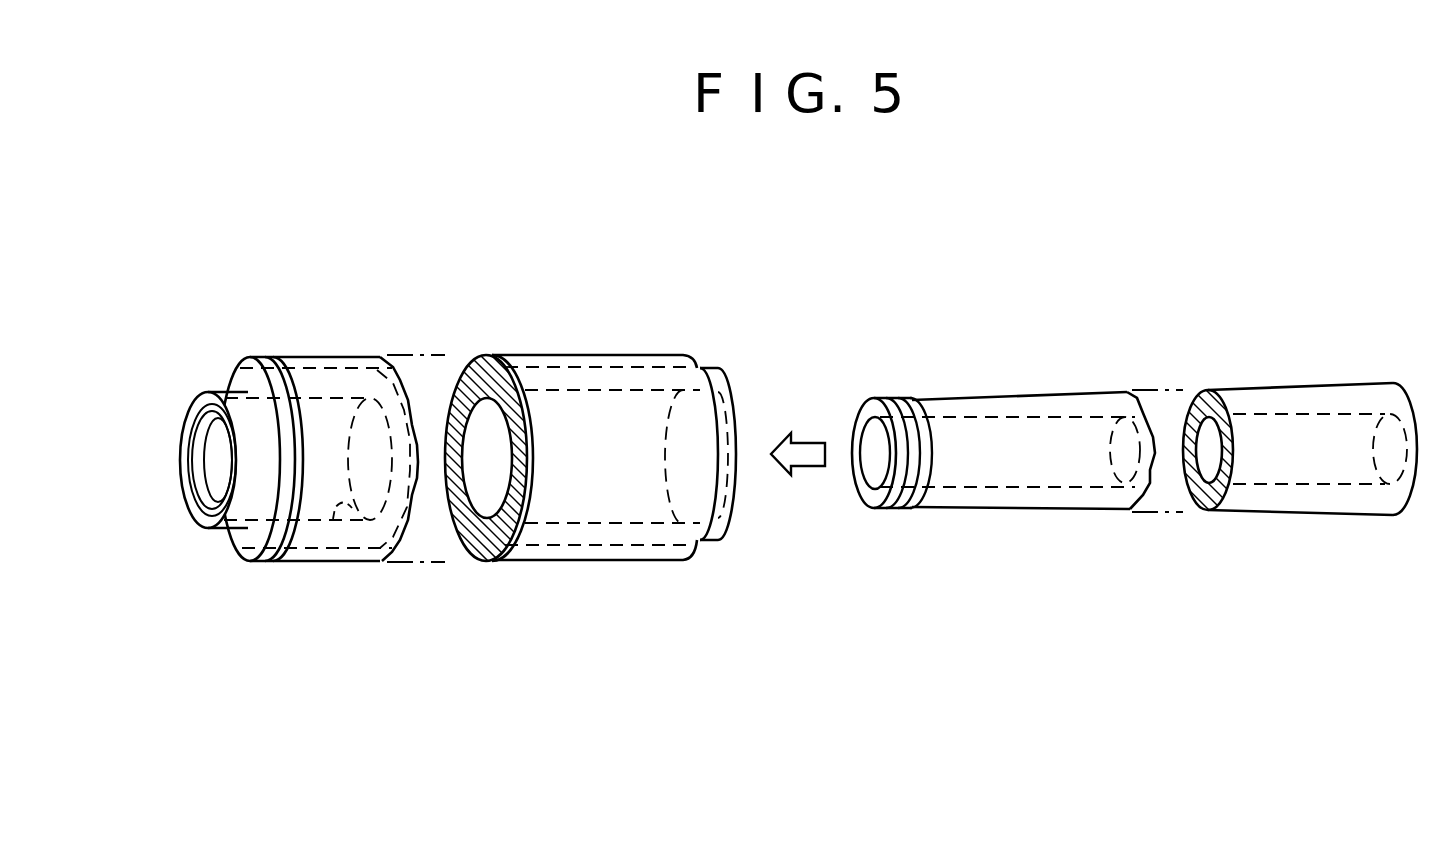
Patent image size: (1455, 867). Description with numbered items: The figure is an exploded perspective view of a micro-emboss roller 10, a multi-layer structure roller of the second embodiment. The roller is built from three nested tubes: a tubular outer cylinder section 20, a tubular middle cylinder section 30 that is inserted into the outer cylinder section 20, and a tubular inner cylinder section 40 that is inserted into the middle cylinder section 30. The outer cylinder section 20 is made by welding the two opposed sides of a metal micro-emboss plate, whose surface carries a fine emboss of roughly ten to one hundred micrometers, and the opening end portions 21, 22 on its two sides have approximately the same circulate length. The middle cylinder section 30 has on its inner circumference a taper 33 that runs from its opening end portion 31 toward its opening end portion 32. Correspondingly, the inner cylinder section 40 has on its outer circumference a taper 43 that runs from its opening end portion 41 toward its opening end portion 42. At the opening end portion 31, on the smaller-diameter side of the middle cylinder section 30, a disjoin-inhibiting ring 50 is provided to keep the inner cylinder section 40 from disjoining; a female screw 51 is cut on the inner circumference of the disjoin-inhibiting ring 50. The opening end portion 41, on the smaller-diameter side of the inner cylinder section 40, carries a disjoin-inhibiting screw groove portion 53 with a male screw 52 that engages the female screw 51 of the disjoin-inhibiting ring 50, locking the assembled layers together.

The micro-emboss roller 10 is at (236, 201).
The outer cylinder section 20 is at (490, 357).
The opening end portion 21 is at (285, 380).
The opening end portion 22 is at (692, 362).
The middle cylinder section 30 is at (486, 365).
The opening end portion 31 is at (241, 380).
The opening end portion 32 is at (722, 380).
The taper 33 is at (350, 512).
The inner cylinder section 40 is at (1293, 398).
The opening end portion 41 is at (896, 399).
The opening end portion 42 is at (1407, 397).
The taper 43 is at (1040, 397).
The disjoin-inhibiting ring 50 is at (212, 392).
The female screw 51 is at (200, 466).
The male screw 52 is at (912, 452).
The disjoin-inhibiting screw groove portion 53 is at (903, 511).